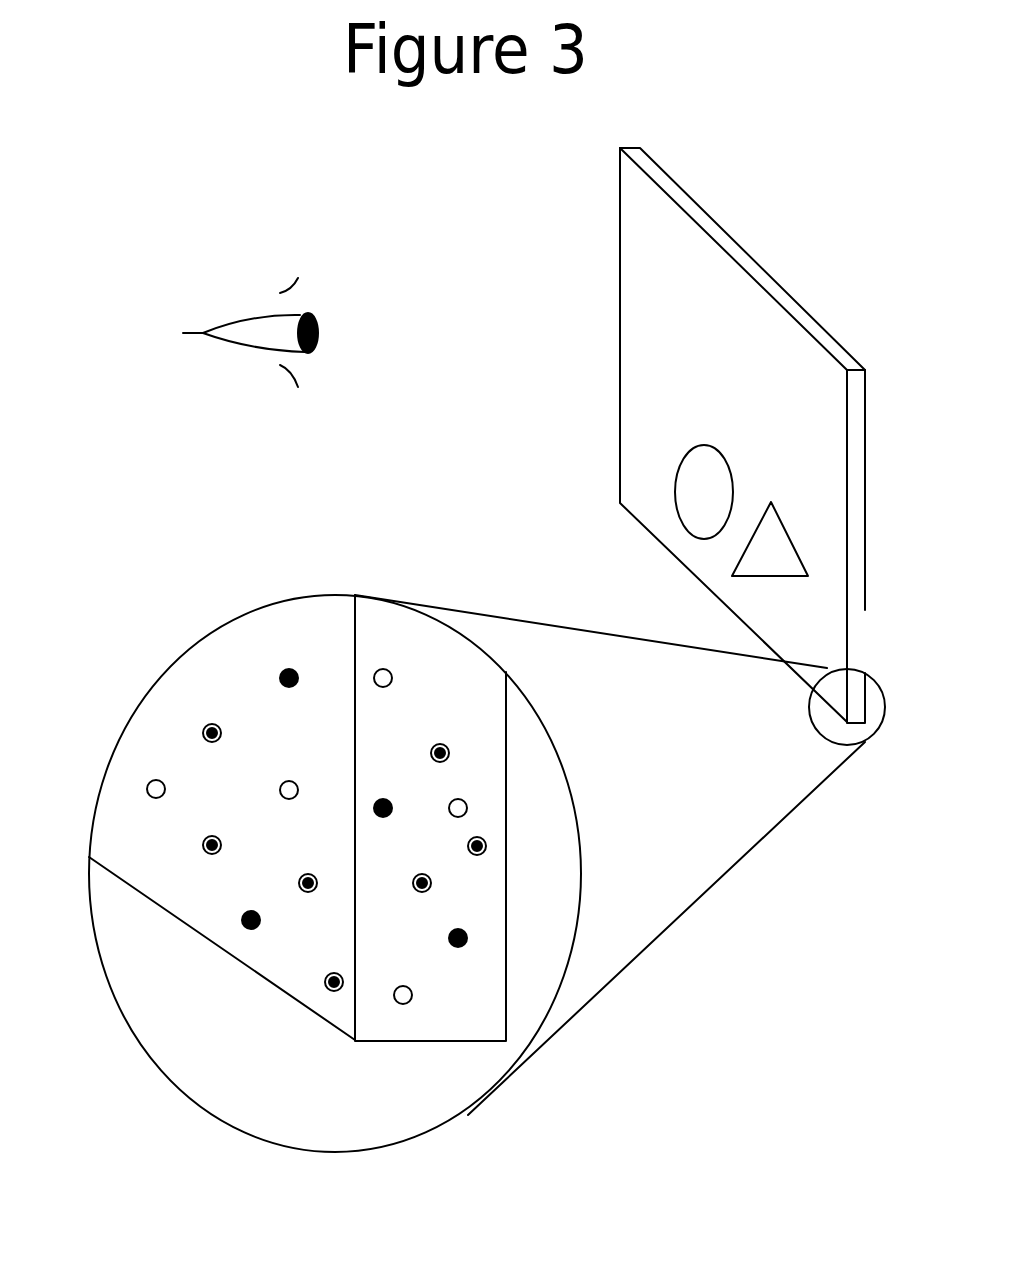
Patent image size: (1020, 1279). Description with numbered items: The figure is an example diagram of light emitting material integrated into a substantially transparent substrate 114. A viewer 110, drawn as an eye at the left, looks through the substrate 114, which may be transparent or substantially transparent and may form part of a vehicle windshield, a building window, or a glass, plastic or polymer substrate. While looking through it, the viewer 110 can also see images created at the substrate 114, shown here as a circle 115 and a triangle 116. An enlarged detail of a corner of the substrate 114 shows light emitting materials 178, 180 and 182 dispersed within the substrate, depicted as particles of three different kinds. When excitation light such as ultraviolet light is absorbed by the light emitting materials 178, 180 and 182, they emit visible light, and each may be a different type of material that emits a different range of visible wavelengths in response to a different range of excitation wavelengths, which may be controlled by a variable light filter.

The viewer 110 is at (297, 297).
The substrate 114 is at (733, 238).
The circle 115 is at (693, 483).
The triangle 116 is at (770, 557).
The light emitting material 178 is at (203, 723).
The light emitting material 180 is at (147, 782).
The light emitting material 182 is at (280, 668).